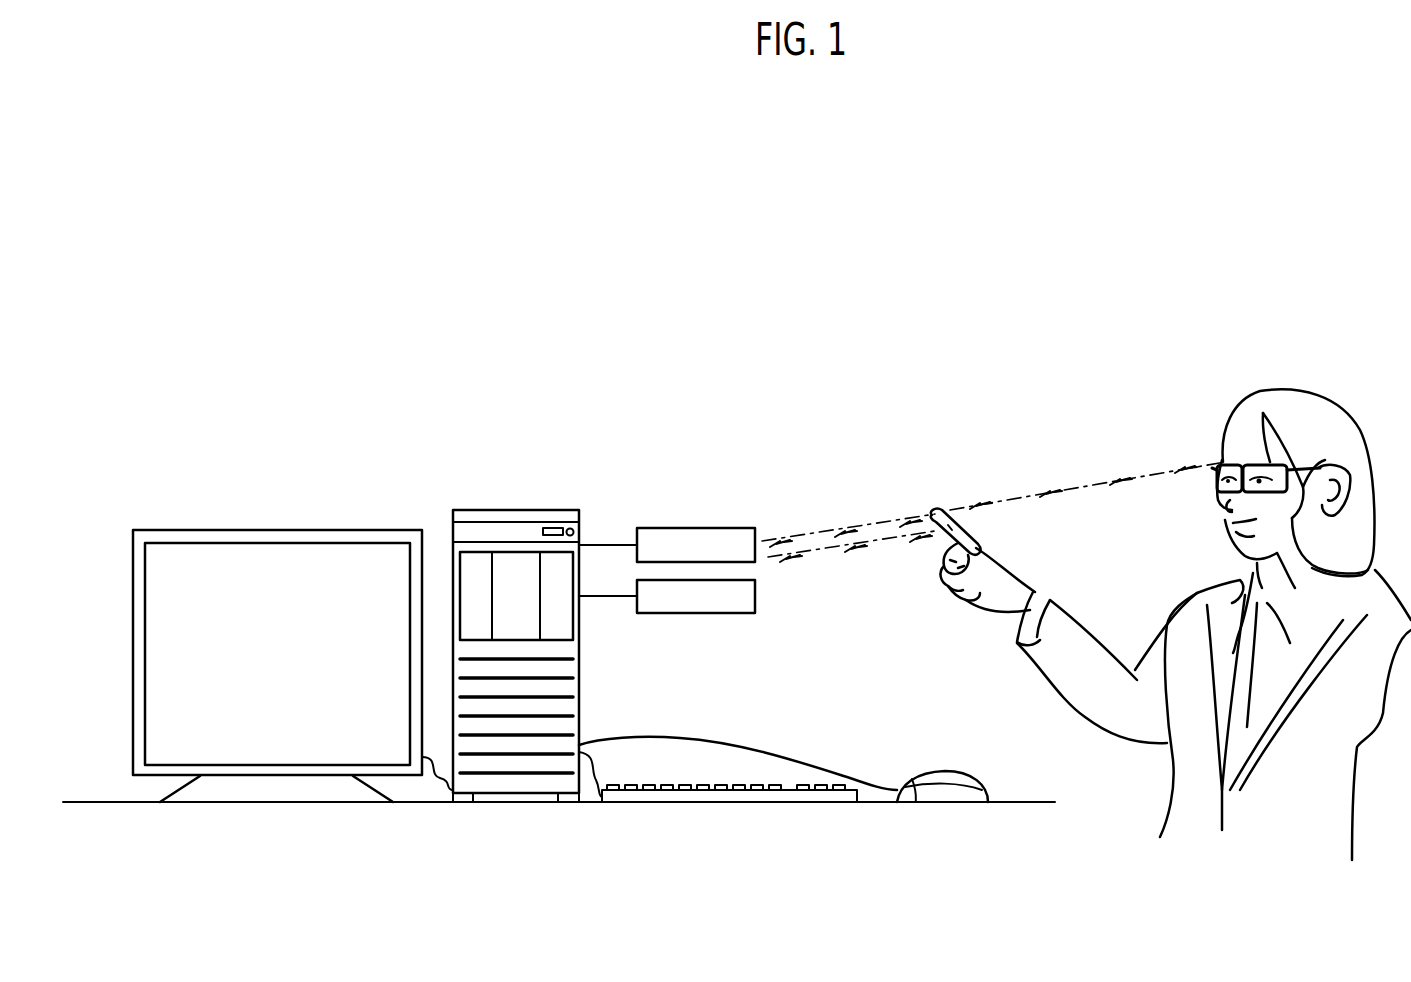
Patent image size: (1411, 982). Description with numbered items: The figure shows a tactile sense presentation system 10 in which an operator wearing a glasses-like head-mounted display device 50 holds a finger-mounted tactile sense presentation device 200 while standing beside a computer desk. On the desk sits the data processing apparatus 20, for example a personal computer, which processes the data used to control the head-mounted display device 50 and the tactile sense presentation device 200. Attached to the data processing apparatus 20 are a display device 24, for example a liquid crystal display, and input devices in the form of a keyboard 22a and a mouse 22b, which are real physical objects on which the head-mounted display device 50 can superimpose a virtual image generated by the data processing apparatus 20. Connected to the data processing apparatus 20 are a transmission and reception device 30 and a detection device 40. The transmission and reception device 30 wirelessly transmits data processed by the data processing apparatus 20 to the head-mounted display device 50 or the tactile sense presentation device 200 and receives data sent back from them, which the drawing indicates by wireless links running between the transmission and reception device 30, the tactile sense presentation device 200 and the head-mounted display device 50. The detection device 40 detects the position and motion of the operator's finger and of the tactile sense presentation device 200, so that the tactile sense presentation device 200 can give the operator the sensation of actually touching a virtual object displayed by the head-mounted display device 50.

The tactile sense presentation system 10 is at (892, 335).
The data processing apparatus 20 is at (484, 510).
The keyboard 22a is at (651, 797).
The mouse 22b is at (913, 797).
The display device 24 is at (224, 530).
The transmission and reception device 30 is at (741, 528).
The detection device 40 is at (738, 613).
The head-mounted display device 50 is at (1270, 447).
The tactile sense presentation device 200 is at (980, 540).